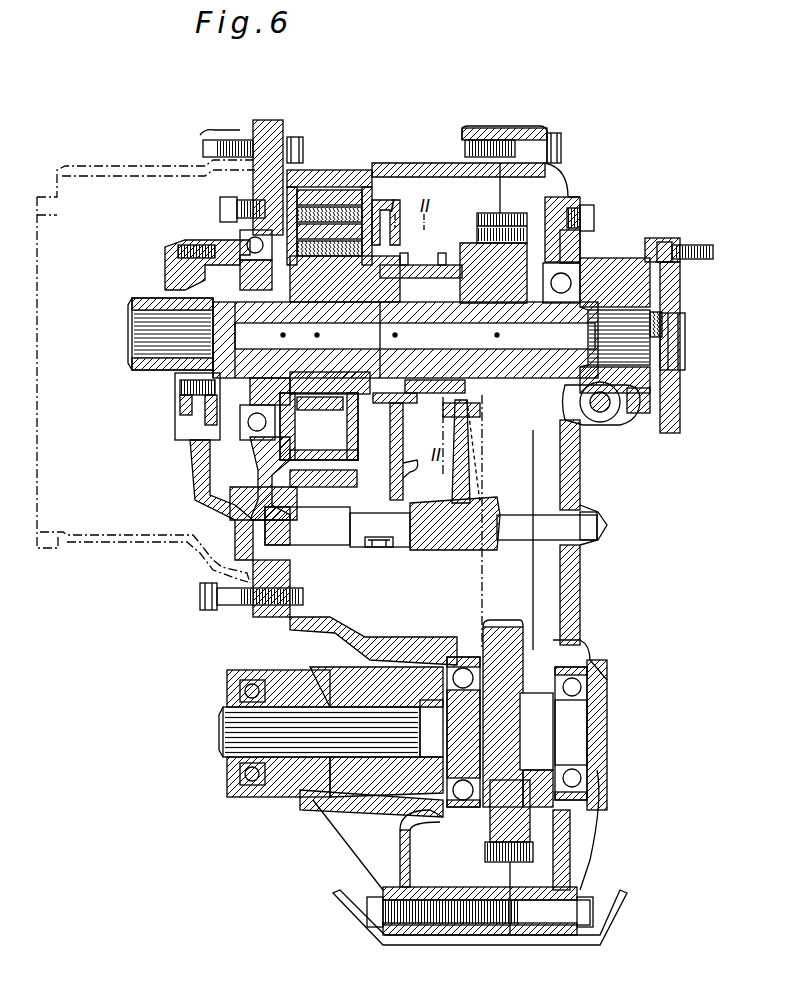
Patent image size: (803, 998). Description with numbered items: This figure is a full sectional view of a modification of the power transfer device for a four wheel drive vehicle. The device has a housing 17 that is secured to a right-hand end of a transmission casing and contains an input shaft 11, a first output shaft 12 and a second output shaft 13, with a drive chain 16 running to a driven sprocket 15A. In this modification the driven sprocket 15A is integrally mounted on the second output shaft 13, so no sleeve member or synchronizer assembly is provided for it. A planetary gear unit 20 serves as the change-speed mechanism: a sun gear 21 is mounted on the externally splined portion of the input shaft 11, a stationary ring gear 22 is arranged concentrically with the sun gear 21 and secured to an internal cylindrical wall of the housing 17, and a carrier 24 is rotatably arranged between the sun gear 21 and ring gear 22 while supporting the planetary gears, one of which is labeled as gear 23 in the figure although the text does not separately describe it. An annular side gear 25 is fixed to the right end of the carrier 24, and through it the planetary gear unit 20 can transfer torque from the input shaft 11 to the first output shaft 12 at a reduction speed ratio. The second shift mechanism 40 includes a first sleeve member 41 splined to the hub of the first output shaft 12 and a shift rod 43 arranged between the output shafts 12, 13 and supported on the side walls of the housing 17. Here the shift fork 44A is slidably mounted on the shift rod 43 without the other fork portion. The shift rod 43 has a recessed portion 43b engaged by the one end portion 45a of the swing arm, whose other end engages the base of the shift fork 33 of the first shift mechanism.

The input shaft 11 is at (150, 365).
The first output shaft 12 is at (682, 347).
The second output shaft 13 is at (372, 752).
The driven sprocket 15A is at (482, 635).
The drive chain 16 is at (482, 597).
The housing 17 is at (313, 628).
The planetary gear unit 20 is at (451, 532).
The sun gear 21 is at (330, 412).
The stationary ring gear 22 is at (322, 178).
The gear 23 is at (340, 185).
The carrier 24 is at (240, 395).
The annular side gear 25 is at (374, 207).
The shift fork 33 is at (405, 476).
The second shift mechanism 40 is at (447, 560).
The first sleeve member 41 is at (450, 257).
The shift rod 43 is at (513, 532).
The recessed portion 43b is at (378, 535).
The shift fork 44A is at (470, 490).
The one end portion of swing arm 45a is at (383, 549).